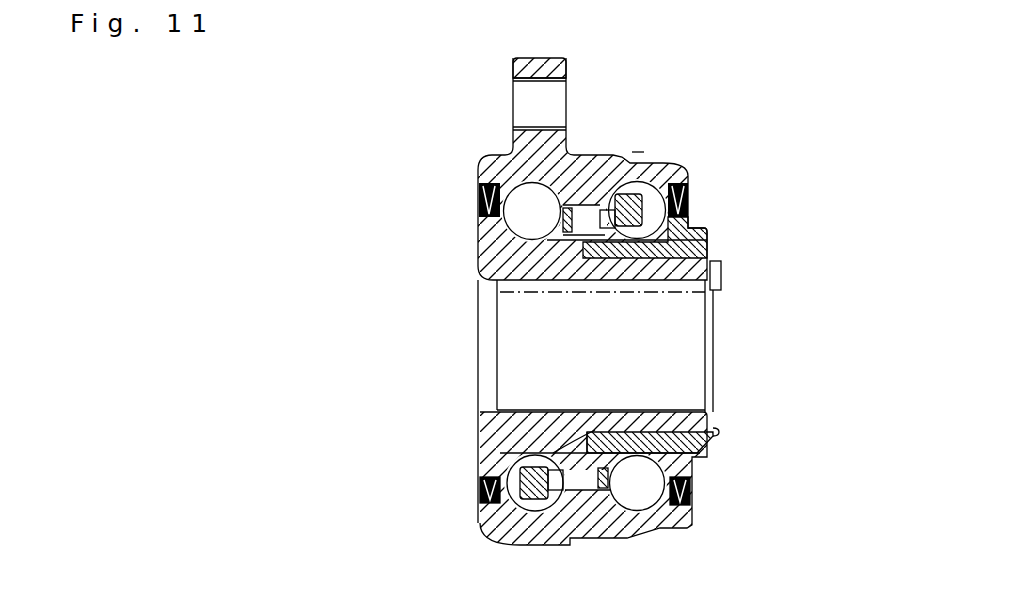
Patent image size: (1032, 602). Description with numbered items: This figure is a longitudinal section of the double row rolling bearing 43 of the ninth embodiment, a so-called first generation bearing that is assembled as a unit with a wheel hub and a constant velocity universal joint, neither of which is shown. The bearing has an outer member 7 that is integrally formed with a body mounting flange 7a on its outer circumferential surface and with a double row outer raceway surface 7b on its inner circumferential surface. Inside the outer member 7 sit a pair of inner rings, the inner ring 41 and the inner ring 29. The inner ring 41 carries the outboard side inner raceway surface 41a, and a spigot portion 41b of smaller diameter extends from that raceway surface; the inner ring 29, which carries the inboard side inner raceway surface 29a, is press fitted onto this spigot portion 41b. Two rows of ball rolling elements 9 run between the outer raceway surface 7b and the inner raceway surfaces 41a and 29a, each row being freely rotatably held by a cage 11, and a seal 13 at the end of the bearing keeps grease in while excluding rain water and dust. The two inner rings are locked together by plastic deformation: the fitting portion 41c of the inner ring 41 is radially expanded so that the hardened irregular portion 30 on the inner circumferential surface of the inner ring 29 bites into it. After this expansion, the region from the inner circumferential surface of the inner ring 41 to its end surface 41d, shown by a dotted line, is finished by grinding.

The outer member 7 is at (575, 158).
The body mounting flange 7a is at (528, 68).
The outer raceway surface 7b is at (516, 186).
The rolling element 9 is at (608, 448).
The cage 11 is at (617, 182).
The seal 13 is at (691, 486).
The inner ring 29 is at (712, 241).
The inboard side inner raceway surface 29a is at (647, 466).
The irregular portion 30 is at (722, 428).
The inner ring 41 is at (495, 242).
The outboard side inner raceway surface 41a is at (523, 243).
The spigot portion 41b is at (621, 243).
The fitting portion 41c is at (720, 272).
The end surface 41d is at (685, 293).
The double row rolling bearing 43 is at (647, 149).